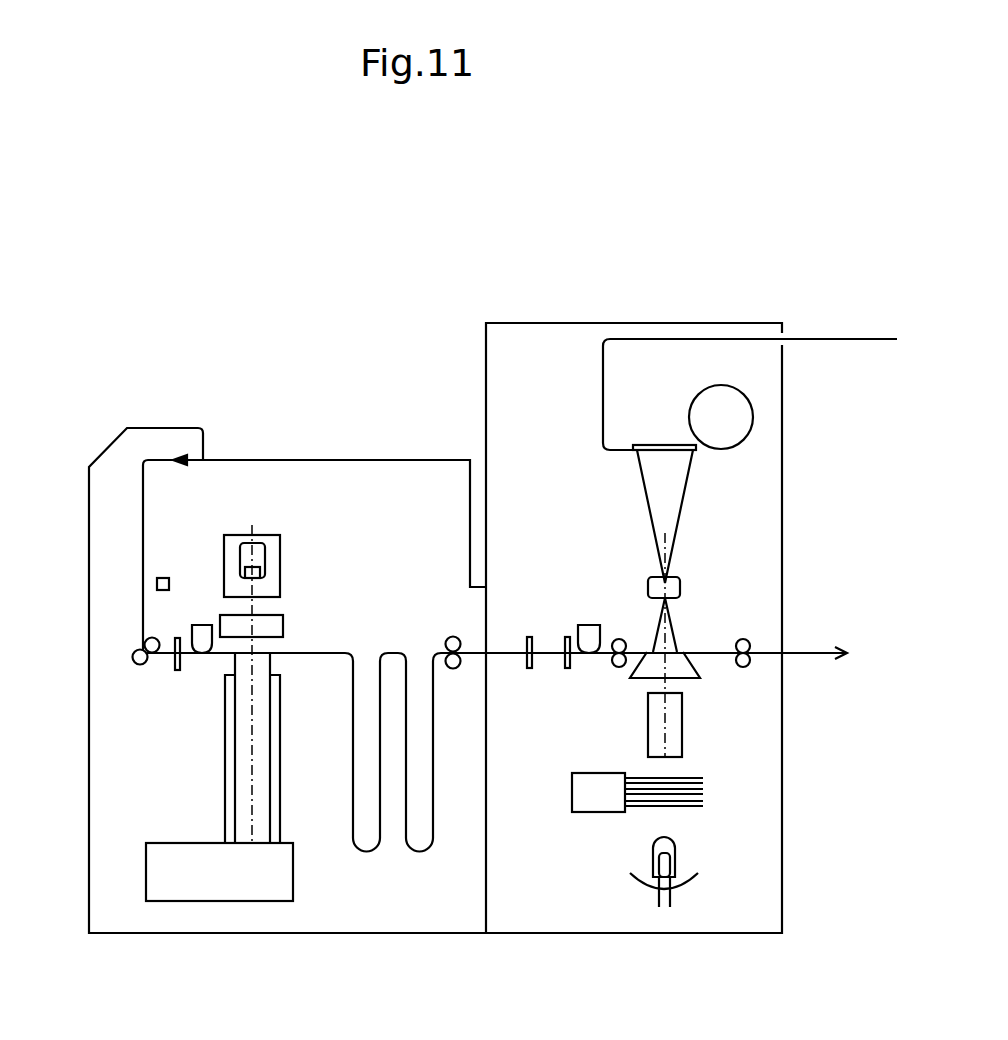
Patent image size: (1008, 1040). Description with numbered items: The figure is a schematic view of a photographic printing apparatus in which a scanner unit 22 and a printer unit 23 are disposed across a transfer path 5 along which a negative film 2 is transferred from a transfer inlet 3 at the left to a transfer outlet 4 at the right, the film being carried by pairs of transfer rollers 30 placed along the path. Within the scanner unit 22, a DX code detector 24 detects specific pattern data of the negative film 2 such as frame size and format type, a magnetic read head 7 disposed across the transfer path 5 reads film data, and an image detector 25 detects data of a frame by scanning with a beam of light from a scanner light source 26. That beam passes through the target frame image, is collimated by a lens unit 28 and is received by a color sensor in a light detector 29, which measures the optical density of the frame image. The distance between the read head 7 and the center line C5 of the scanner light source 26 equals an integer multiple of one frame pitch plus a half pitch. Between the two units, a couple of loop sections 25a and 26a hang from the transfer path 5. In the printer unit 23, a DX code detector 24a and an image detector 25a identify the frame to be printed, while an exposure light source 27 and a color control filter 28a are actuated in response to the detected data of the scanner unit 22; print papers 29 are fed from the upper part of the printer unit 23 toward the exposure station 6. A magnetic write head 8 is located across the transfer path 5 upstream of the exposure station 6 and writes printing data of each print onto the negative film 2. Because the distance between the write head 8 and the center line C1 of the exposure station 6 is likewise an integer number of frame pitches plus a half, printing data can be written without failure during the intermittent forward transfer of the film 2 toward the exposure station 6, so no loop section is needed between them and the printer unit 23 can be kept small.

The negative film 2 is at (343, 657).
The transfer inlet 3 is at (206, 443).
The transfer outlet 4 is at (787, 647).
The transfer path 5 is at (512, 650).
The exposure station 6 is at (657, 632).
The magnetic read head 7 is at (193, 627).
The magnetic write head 8 is at (587, 623).
The scanner unit 22 is at (335, 458).
The printer unit 23 is at (587, 322).
The DX code detector 24 is at (163, 575).
The DX code detector 24a is at (528, 670).
The image detector 25 is at (175, 668).
The loop section / image detector 25a is at (367, 850).
The scanner light source 26 is at (262, 552).
The loop section 26a is at (422, 845).
The exposure light source 27 is at (670, 845).
The lens unit 28 is at (235, 757).
The color control filter 28a is at (683, 773).
The light detector / print papers 29 is at (722, 337).
The transfer rollers 30 is at (132, 657).
The center line of the exposure station C1 is at (688, 600).
The center line of the scanner light source C5 is at (250, 725).